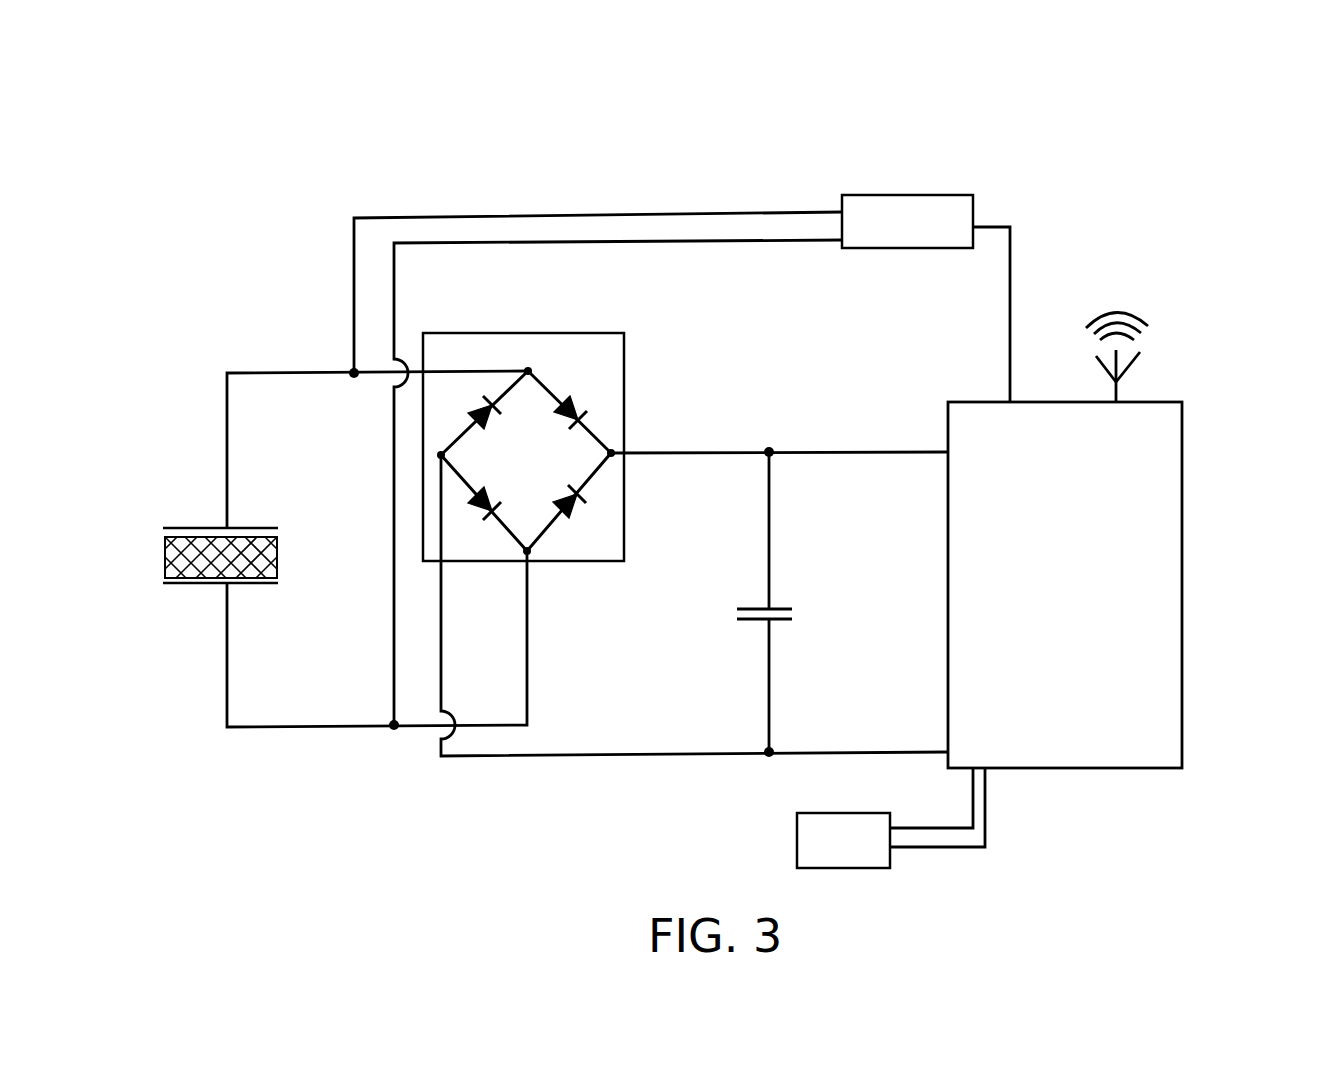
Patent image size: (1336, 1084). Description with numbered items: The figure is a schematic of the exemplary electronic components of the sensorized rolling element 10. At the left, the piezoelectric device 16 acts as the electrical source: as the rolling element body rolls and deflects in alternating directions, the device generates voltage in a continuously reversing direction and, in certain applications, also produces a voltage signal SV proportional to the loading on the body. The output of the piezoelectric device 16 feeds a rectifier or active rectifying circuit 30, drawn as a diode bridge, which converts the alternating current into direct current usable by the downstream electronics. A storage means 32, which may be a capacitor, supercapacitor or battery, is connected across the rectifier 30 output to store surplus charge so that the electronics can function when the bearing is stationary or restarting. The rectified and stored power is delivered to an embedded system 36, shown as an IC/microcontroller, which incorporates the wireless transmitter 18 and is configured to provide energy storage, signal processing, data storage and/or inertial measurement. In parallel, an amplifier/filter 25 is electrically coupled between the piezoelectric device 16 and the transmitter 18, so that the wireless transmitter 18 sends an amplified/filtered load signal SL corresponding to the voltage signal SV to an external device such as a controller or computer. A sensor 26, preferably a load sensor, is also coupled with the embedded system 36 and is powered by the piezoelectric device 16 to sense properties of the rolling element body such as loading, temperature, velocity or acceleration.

The sensorized rolling element 10 is at (310, 90).
The piezoelectric device 16 is at (172, 502).
The wireless transmitter 18 is at (1082, 348).
The amplifier/filter 25 is at (915, 172).
The sensor 26 is at (778, 810).
The rectifier 30 is at (618, 398).
The storage means 32 is at (784, 638).
The embedded system 36 is at (1200, 501).
The voltage signal SV is at (680, 210).
The load signal SL is at (1125, 314).